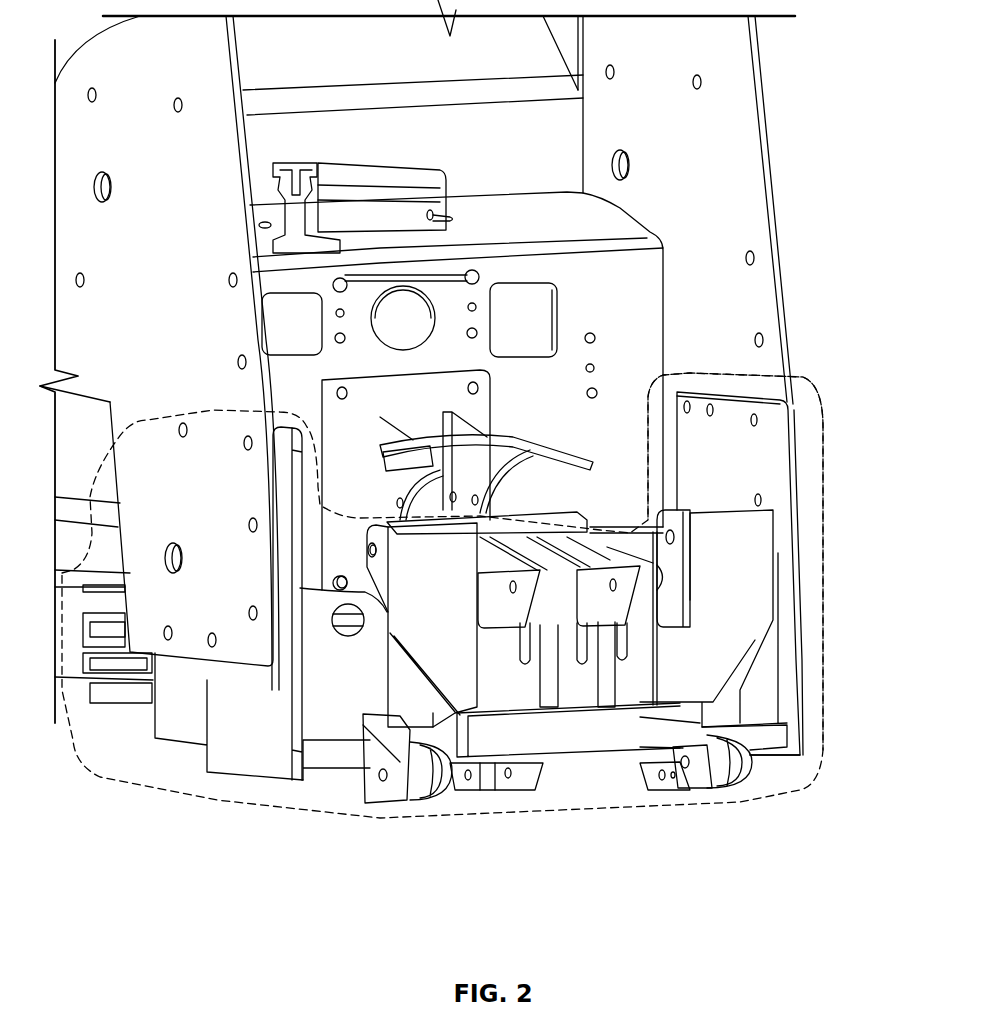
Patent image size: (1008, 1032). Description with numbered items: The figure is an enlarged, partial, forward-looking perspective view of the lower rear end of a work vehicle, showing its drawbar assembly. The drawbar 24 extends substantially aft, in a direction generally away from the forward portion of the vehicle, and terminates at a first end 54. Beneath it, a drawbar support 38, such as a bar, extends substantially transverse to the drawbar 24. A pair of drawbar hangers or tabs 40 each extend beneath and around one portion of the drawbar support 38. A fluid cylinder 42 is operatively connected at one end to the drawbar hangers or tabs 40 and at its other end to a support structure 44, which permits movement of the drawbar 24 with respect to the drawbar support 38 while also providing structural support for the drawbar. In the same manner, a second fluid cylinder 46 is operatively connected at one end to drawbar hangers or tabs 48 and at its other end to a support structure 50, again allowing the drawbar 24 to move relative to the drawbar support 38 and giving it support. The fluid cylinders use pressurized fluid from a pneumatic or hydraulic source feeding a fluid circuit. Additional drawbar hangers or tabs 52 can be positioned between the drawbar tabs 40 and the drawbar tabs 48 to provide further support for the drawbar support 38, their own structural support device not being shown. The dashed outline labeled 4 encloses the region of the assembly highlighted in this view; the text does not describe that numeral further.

The mounting assembly 4 is at (825, 432).
The drawbar 24 is at (568, 718).
The drawbar support 38 is at (317, 773).
The drawbar hangers or tabs 40 is at (435, 803).
The fluid cylinder 42 is at (403, 678).
The support structure 44 is at (363, 560).
The fluid cylinder 46 is at (737, 692).
The drawbar hangers or tabs 48 is at (740, 773).
The support structure 50 is at (780, 533).
The additional drawbar hangers or tabs 52 is at (538, 778).
The first end 54 is at (613, 712).